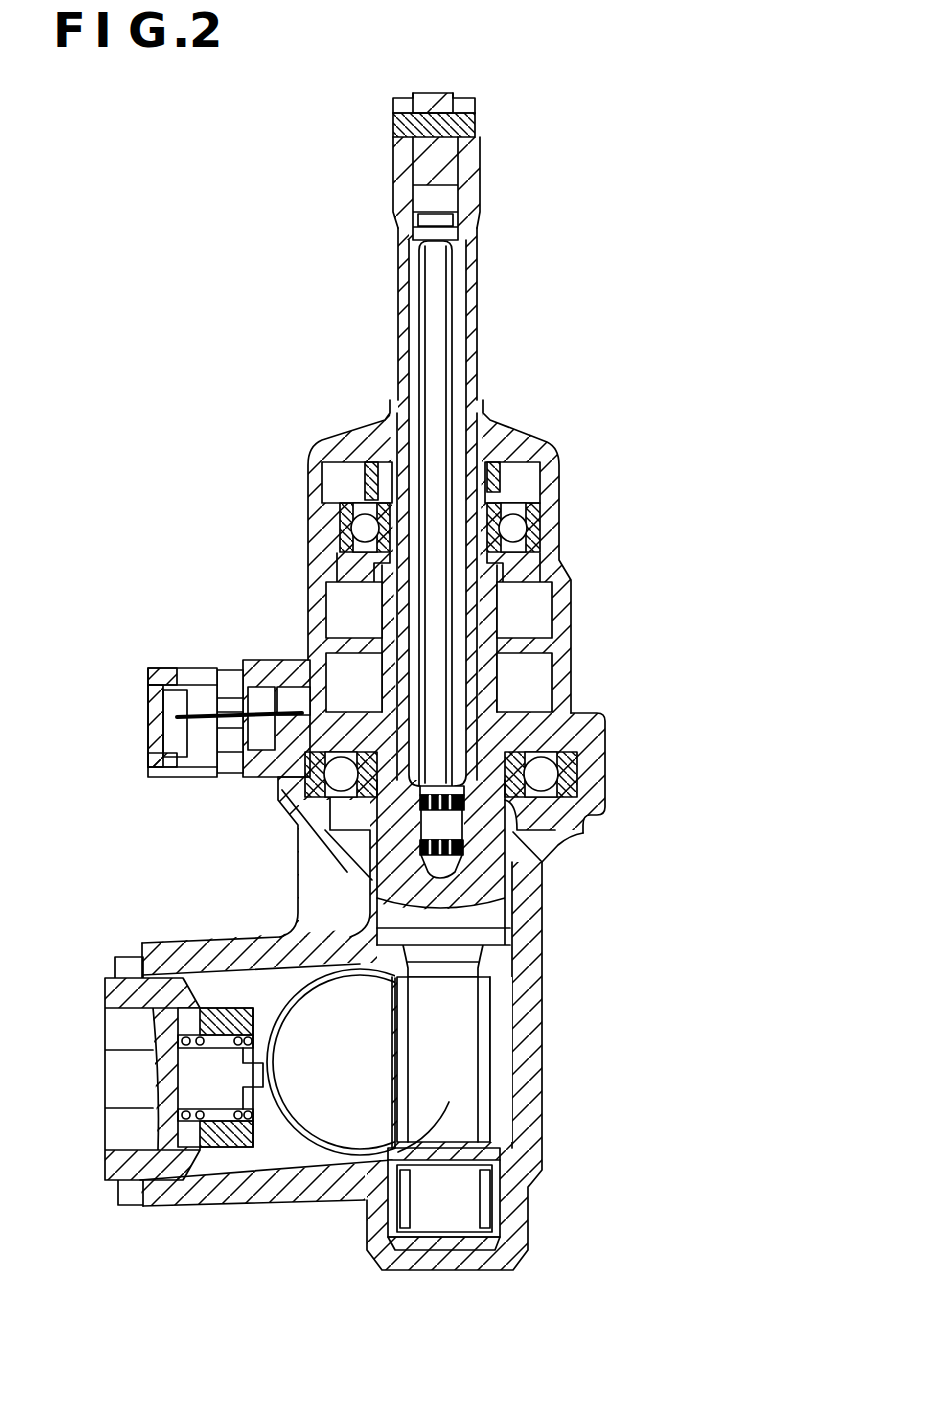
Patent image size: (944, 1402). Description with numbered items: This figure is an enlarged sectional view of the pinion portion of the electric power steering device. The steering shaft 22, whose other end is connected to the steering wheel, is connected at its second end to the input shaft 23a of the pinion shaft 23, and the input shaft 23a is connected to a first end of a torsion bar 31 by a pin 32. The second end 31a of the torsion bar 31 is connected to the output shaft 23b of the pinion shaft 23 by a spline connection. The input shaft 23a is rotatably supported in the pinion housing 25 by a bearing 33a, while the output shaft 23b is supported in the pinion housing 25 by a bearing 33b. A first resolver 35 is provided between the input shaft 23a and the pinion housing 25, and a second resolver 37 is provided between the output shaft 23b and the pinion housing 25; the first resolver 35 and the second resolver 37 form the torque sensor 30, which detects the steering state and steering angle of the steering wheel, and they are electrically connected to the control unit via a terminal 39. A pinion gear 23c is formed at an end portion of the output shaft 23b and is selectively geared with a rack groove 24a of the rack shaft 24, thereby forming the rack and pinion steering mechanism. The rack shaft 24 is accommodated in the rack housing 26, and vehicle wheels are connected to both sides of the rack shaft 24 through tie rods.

The steering shaft 22 is at (434, 94).
The pin 32 is at (393, 124).
The pinion shaft 23 is at (477, 188).
The torsion bar 31 is at (445, 294).
The input shaft 23a is at (477, 350).
The bearing 33a is at (516, 524).
The torque sensor 30 is at (311, 615).
The first resolver 35 is at (336, 603).
The second resolver 37 is at (336, 672).
The pinion housing 25 is at (607, 743).
The bearing 33b is at (546, 775).
The terminal 39 is at (160, 750).
The rack housing 26 is at (586, 830).
The second end of torsion bar 31a is at (428, 838).
The output shaft 23b is at (500, 909).
The pinion gear 23c is at (483, 1086).
The rack shaft 24 is at (307, 1097).
The rack groove 24a is at (422, 1152).